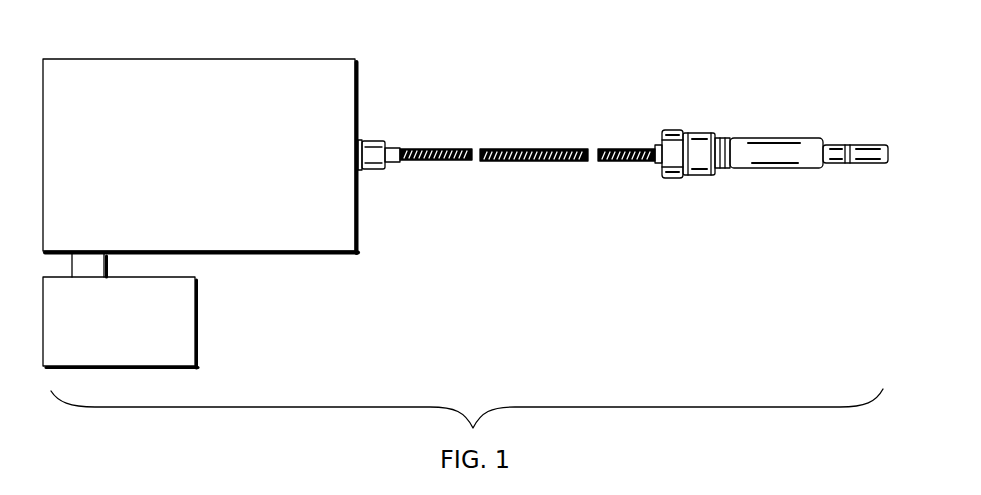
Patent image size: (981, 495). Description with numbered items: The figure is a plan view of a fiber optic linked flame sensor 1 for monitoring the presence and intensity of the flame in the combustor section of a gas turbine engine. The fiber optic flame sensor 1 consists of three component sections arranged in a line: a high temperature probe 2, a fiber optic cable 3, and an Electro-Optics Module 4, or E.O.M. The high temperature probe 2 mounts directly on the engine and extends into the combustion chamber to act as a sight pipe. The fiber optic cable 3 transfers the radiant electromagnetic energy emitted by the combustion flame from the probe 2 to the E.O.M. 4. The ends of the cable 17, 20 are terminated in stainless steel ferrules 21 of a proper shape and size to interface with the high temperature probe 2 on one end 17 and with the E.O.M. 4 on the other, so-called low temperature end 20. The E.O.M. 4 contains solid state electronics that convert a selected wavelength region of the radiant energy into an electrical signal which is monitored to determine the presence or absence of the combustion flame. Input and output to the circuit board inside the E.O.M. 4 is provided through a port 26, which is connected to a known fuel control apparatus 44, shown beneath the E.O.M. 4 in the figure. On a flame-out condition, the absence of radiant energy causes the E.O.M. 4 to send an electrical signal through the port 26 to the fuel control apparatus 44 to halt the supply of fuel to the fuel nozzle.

The fiber optic flame sensor 1 is at (517, 82).
The high temperature probe 2 is at (757, 138).
The fiber optic cable 3 is at (520, 162).
The Electro-Optics Module 4 is at (105, 59).
The cable end 17 is at (613, 162).
The low temperature end of the fiber optic cable 20 is at (437, 163).
The stainless steel ferrules 21 is at (384, 170).
The port 26 is at (108, 272).
The fuel control apparatus 44 is at (197, 337).